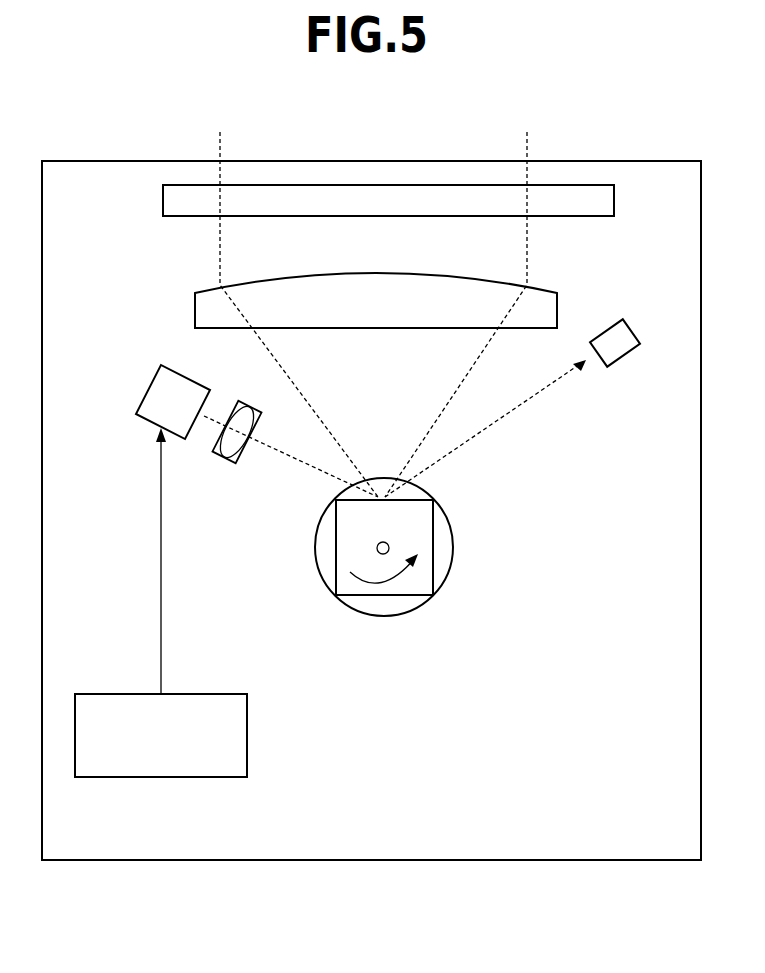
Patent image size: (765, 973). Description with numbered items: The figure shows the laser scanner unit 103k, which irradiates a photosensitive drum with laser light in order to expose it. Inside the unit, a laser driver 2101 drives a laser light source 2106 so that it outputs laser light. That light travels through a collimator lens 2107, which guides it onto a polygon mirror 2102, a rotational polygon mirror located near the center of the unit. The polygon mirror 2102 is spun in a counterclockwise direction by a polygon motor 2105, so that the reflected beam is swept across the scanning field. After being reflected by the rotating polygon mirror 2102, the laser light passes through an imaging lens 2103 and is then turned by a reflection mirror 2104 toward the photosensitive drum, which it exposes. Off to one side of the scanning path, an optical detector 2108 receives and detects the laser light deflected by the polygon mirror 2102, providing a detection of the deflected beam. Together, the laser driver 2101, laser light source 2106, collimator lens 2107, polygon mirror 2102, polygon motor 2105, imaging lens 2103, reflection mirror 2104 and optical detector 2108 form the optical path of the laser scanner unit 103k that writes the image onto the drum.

The laser scanner unit 103k is at (112, 160).
The laser driver 2101 is at (247, 733).
The polygon mirror 2102 is at (435, 545).
The imaging lens 2103 is at (375, 328).
The reflection mirror 2104 is at (163, 198).
The polygon motor 2105 is at (382, 617).
The laser light source 2106 is at (148, 392).
The collimator lens 2107 is at (233, 464).
The optical detector 2108 is at (596, 330).